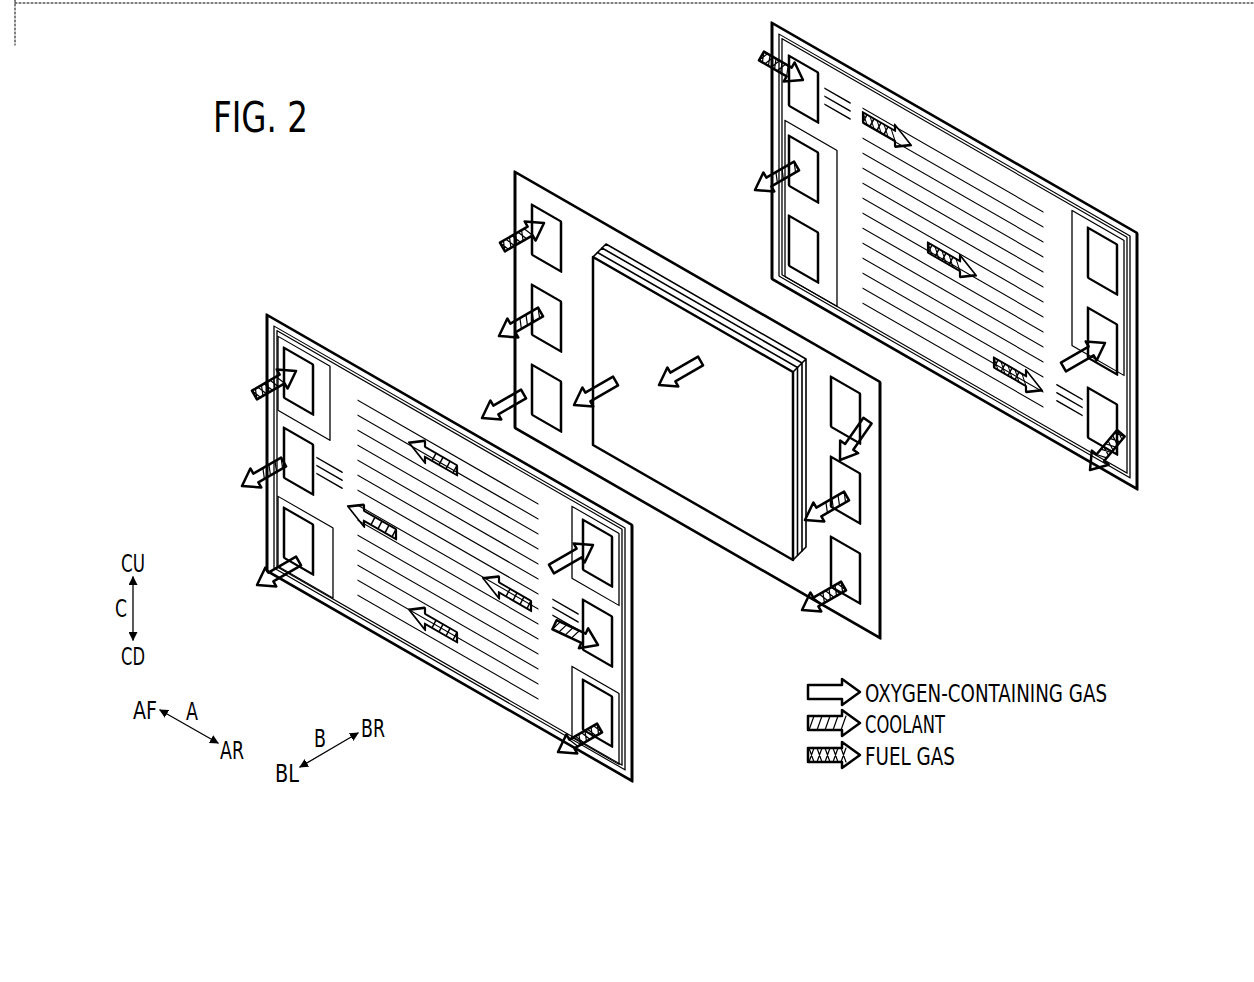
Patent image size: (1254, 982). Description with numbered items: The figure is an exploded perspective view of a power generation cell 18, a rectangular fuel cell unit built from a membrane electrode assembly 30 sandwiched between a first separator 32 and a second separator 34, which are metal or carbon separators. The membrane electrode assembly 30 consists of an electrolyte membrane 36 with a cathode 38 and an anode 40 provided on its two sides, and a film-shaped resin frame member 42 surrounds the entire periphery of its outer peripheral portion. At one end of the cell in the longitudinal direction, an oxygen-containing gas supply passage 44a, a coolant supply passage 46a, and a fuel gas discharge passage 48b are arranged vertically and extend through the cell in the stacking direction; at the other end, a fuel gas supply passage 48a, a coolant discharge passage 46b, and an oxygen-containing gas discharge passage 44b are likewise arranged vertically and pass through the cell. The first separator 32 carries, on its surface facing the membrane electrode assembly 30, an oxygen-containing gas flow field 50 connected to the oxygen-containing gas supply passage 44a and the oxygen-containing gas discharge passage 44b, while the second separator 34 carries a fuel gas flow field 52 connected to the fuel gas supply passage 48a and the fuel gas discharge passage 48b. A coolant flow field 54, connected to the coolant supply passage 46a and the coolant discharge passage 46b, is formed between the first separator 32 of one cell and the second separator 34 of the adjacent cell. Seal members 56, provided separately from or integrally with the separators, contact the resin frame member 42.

The power generation cell 18 is at (344, 208).
The membrane electrode assembly 30 is at (699, 358).
The first separator 32 is at (265, 318).
The second separator 34 is at (768, 27).
The electrolyte membrane 36 is at (693, 335).
The cathode 38 is at (635, 296).
The anode 40 is at (667, 283).
The resin frame member 42 is at (599, 233).
The oxygen-containing gas supply passage 44a is at (612, 571).
The oxygen-containing gas discharge passage 44b is at (294, 527).
The coolant supply passage 46a is at (608, 630).
The coolant discharge passage 46b is at (294, 447).
The fuel gas supply passage 48a is at (294, 361).
The fuel gas discharge passage 48b is at (604, 712).
The oxygen-containing gas flow field 50 is at (470, 620).
The fuel gas flow field 52 is at (983, 345).
The coolant flow field 54 is at (385, 590).
The seal member 56 is at (349, 372).